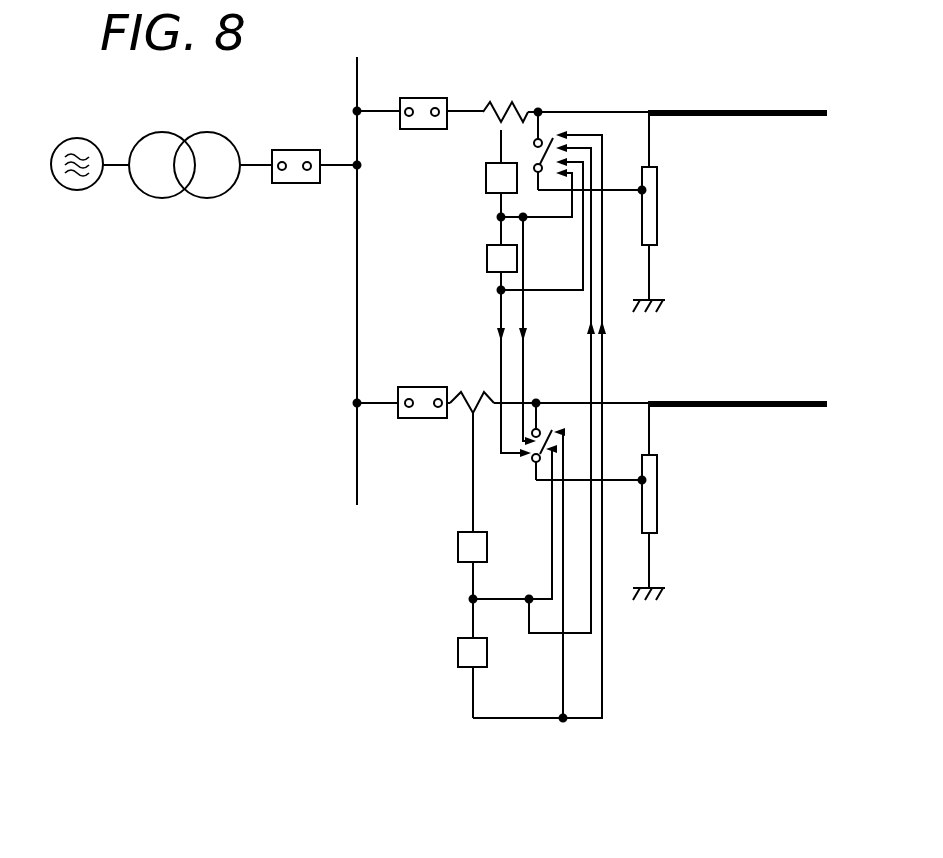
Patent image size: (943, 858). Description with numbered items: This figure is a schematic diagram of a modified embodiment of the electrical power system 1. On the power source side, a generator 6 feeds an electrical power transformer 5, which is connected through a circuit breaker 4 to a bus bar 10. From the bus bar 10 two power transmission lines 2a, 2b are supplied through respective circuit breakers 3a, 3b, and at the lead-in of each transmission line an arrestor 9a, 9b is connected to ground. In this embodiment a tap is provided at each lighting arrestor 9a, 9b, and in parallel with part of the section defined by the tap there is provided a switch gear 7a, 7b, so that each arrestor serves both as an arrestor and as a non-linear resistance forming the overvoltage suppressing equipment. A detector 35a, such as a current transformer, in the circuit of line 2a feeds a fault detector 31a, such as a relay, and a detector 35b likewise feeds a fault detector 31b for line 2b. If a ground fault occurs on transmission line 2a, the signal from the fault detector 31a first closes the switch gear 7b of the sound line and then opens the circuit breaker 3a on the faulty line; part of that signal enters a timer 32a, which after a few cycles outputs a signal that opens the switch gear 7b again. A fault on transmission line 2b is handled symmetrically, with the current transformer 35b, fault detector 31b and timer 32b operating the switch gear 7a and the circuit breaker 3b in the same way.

The electrical power system 1 is at (312, 281).
The power transmission line 2a is at (754, 110).
The power transmission line 2b is at (773, 400).
The circuit breaker 3a is at (439, 98).
The circuit breaker 3b is at (410, 387).
The circuit breaker 4 is at (280, 186).
The electrical power transformer 5 is at (174, 132).
The generator 6 is at (82, 138).
The switch gear 7a is at (537, 160).
The switch gear 7b is at (545, 426).
The arrestor 9a is at (657, 183).
The arrestor 9b is at (657, 468).
The bus bar 10 is at (357, 362).
The fault detector 31a is at (486, 178).
The fault detector 31b is at (458, 550).
The timer 32a is at (487, 255).
The timer 32b is at (458, 653).
The detector 35a is at (500, 101).
The current transformer 35b is at (470, 391).